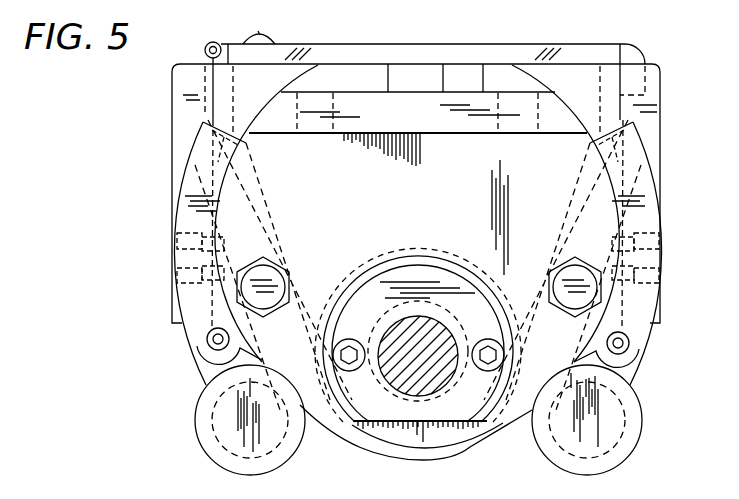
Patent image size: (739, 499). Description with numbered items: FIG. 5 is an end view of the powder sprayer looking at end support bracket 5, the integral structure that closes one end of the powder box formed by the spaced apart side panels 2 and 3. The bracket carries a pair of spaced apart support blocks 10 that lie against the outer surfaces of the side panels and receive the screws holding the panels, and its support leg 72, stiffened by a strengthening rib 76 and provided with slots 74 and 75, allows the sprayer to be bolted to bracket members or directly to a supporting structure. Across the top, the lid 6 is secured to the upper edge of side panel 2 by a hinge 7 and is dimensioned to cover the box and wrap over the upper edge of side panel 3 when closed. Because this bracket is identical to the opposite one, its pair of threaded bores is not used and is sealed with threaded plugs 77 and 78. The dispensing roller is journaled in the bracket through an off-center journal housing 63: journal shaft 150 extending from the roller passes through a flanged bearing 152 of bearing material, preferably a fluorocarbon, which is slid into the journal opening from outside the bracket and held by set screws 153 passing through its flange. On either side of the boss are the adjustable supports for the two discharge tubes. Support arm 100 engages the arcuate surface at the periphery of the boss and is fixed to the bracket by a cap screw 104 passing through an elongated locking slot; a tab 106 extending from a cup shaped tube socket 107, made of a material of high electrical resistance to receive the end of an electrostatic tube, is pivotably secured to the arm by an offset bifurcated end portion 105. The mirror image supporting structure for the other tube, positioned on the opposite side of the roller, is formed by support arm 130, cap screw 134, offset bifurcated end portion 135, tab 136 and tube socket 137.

The end support bracket 5 is at (447, 201).
The lid 6 is at (421, 42).
The pivot pin 7 is at (218, 43).
The support blocks 10 is at (182, 135).
The support leg 72 is at (437, 128).
The slot 74 is at (287, 146).
The slot 75 is at (491, 145).
The strengthening rib 76 is at (397, 88).
The threaded plug 77 is at (278, 268).
The threaded plug 78 is at (570, 263).
The support arm 100 is at (648, 167).
The cap screw 104 is at (655, 248).
The offset bifurcated end portion 105 is at (648, 332).
The tab 106 is at (636, 366).
The tube socket 107 is at (638, 398).
The support arm 130 is at (197, 178).
The cap screw 134 is at (175, 249).
The offset bifurcated end portion 135 is at (201, 341).
The tab 136 is at (214, 376).
The tube socket 137 is at (212, 446).
The journal shaft 150 is at (448, 378).
The flanged bearing 152 is at (400, 270).
The set screws 153 is at (350, 339).
The journal housing 63 is at (357, 411).
The side panel 2 is at (270, 206).
The side panel 3 is at (555, 210).